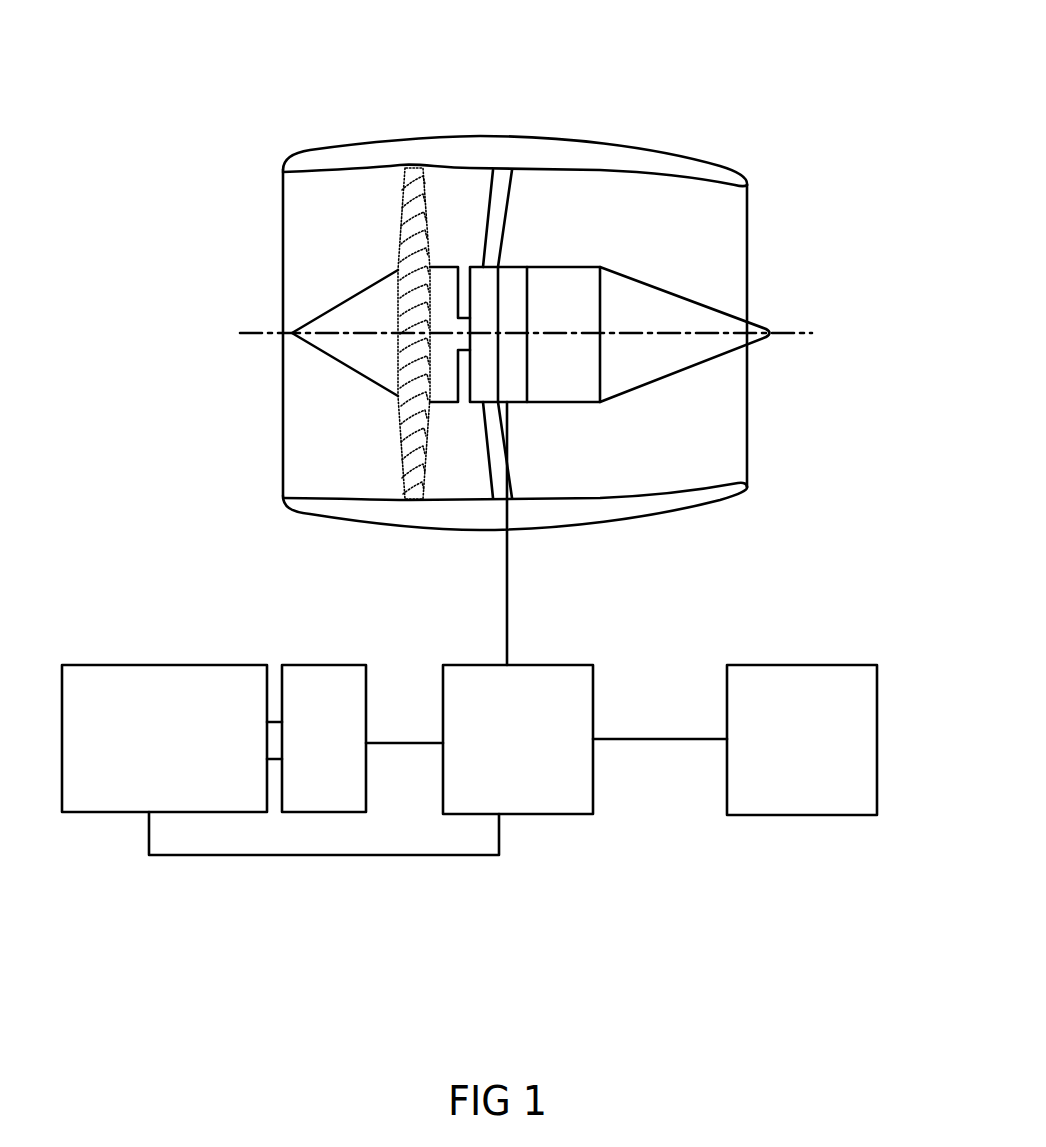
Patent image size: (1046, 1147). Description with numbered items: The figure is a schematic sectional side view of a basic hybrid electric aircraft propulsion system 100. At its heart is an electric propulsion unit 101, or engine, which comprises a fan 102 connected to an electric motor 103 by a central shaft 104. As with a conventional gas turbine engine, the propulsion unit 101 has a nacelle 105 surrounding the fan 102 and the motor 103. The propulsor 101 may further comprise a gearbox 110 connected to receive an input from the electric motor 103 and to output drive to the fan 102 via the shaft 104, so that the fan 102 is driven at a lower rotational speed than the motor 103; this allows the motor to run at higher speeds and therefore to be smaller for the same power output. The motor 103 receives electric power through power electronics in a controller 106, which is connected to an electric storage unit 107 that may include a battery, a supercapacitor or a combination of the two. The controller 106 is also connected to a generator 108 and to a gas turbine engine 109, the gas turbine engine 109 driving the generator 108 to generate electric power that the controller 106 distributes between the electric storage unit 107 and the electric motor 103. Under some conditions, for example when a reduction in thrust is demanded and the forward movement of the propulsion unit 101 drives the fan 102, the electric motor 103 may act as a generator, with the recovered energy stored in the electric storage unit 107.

The hybrid electric aircraft propulsion system 100 is at (847, 125).
The electric propulsion unit 101 is at (270, 174).
The fan 102 is at (392, 257).
The electric motor 103 is at (513, 283).
The central shaft 104 is at (463, 333).
The nacelle 105 is at (622, 144).
The controller 106 is at (562, 665).
The electric storage unit 107 is at (840, 665).
The generator 108 is at (342, 665).
The gas turbine engine 109 is at (182, 665).
The gearbox 110 is at (482, 283).